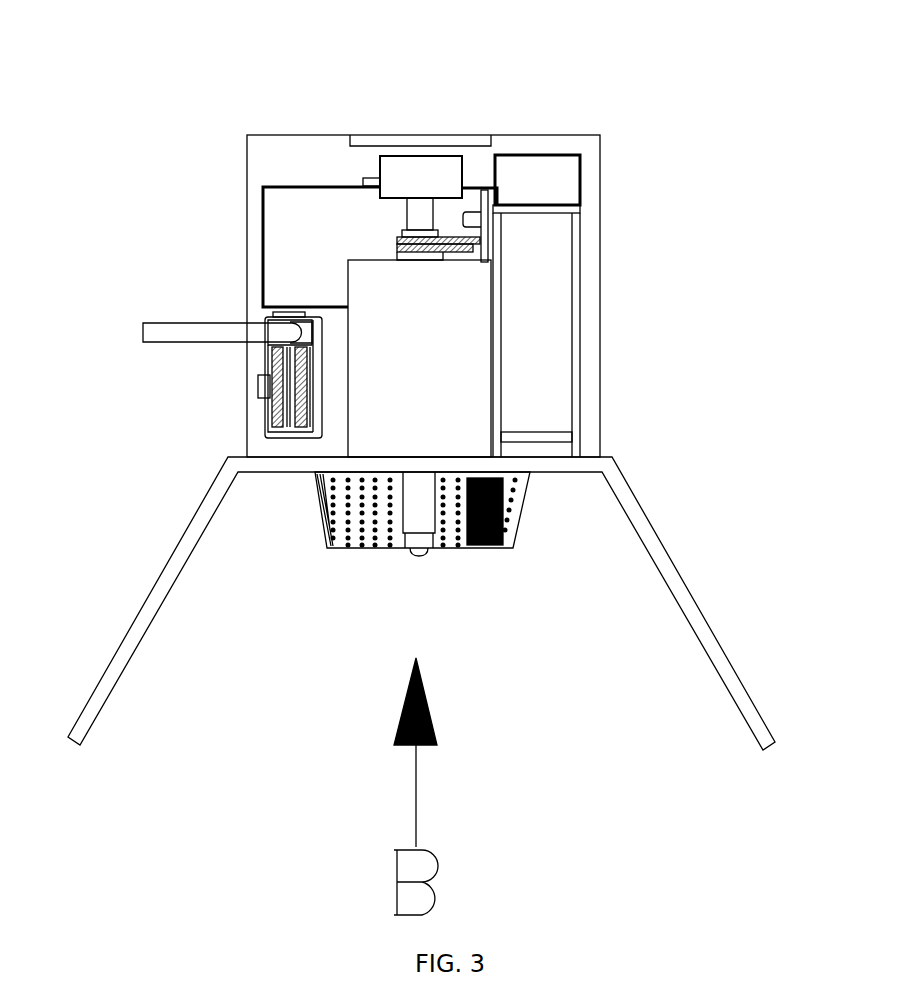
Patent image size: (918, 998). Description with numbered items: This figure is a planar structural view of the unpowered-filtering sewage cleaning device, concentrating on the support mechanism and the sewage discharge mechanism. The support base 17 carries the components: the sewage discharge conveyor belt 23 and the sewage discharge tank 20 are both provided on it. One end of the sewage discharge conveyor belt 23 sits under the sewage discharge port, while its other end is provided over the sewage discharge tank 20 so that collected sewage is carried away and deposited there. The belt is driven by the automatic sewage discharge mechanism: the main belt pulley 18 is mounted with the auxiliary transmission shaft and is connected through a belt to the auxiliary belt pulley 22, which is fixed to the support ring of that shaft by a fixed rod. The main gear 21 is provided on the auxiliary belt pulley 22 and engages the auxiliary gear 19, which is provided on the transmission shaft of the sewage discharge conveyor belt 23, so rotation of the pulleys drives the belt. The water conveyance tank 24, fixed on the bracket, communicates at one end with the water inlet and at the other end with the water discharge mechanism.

The support base 17 is at (315, 157).
The main belt pulley 18 is at (430, 235).
The auxiliary gear 19 is at (482, 194).
The sewage discharge tank 20 is at (522, 177).
The main gear 21 is at (489, 222).
The auxiliary belt pulley 22 is at (491, 253).
The sewage discharge conveyor belt 23 is at (540, 418).
The water conveyance tank 24 is at (424, 378).